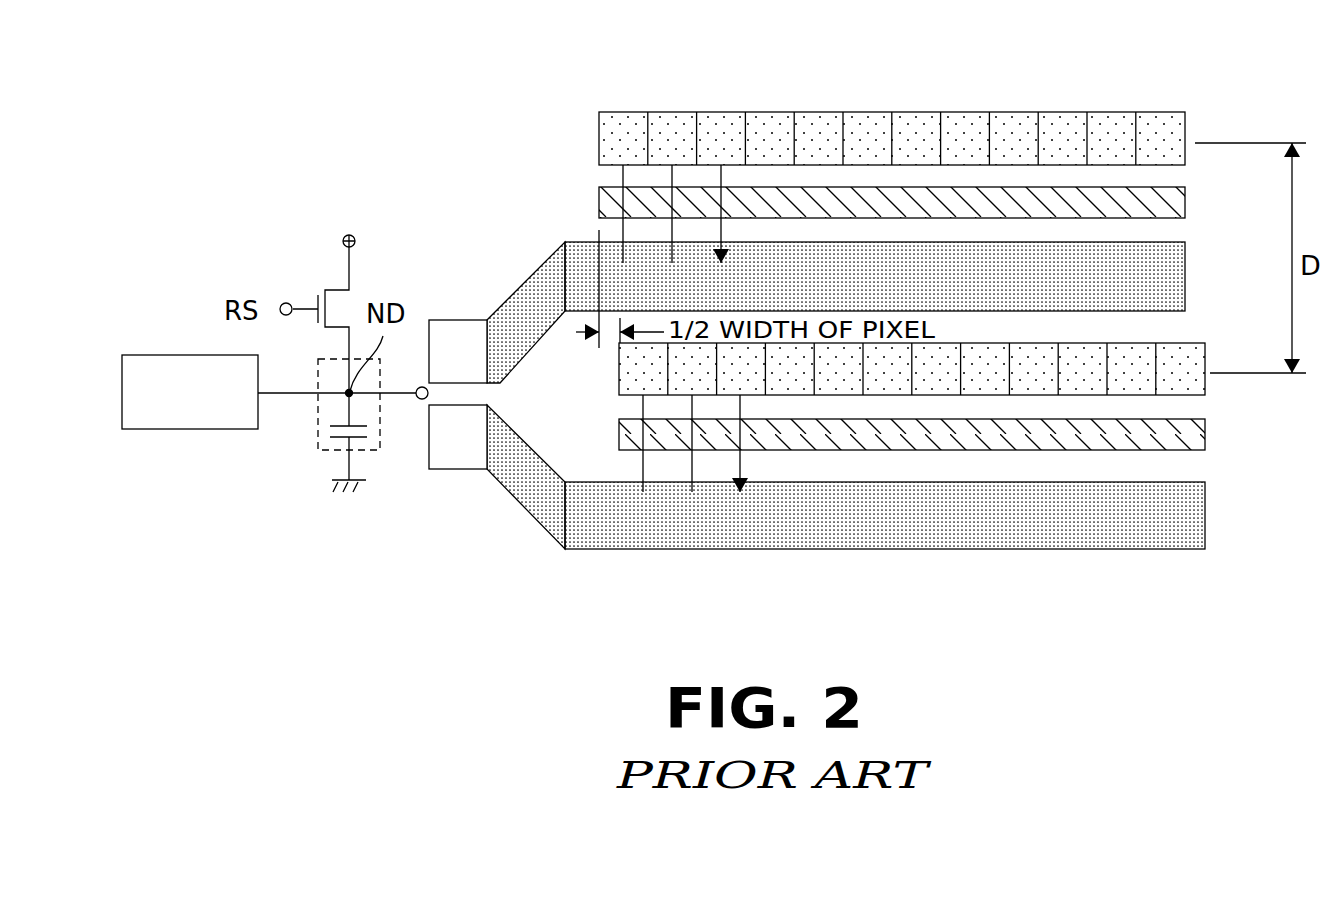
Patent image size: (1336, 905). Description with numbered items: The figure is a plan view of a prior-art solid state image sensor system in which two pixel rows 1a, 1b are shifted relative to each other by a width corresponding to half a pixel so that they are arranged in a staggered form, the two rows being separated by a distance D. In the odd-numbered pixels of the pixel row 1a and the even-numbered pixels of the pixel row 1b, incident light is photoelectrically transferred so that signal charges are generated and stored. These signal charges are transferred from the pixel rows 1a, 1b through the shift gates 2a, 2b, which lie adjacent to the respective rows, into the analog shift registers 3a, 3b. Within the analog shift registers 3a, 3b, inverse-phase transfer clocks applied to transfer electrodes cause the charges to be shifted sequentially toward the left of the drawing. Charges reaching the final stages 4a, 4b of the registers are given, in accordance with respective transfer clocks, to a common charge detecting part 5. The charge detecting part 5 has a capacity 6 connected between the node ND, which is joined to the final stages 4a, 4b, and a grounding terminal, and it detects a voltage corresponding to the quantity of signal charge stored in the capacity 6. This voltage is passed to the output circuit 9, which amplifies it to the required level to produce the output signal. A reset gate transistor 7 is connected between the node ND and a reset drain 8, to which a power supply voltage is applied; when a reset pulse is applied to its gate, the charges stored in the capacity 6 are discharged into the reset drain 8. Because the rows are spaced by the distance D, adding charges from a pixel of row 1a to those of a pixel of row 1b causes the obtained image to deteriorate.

The pixel row 1a is at (1186, 112).
The pixel row 1b is at (1206, 343).
The shift gate 2a is at (1186, 200).
The shift gate 2b is at (1206, 437).
The analog shift register 3a is at (1186, 268).
The analog shift register 3b is at (1206, 514).
The final stage 4a is at (460, 320).
The final stage 4b is at (457, 469).
The charge detecting part 5 is at (318, 451).
The capacity 6 is at (362, 447).
The reset gate transistor 7 is at (318, 290).
The reset drain 8 is at (350, 235).
The output circuit 9 is at (122, 393).